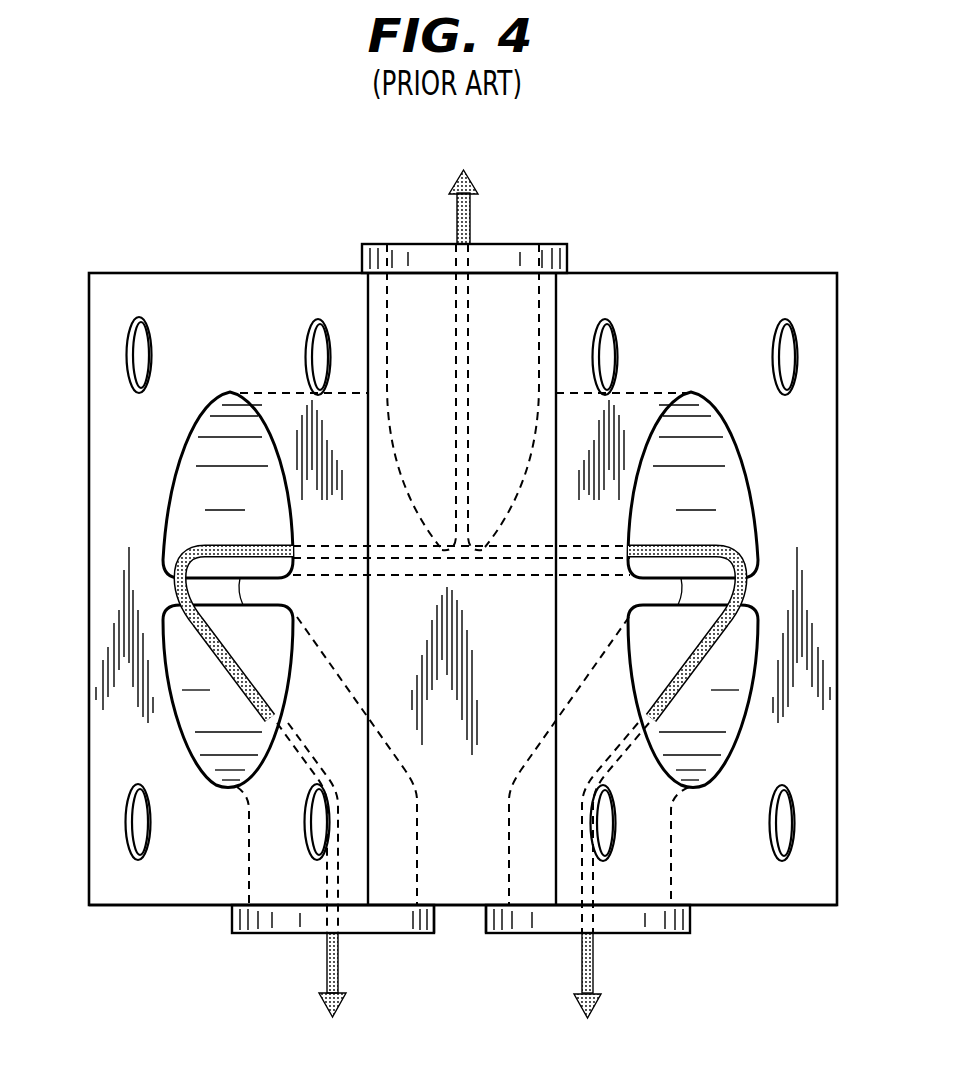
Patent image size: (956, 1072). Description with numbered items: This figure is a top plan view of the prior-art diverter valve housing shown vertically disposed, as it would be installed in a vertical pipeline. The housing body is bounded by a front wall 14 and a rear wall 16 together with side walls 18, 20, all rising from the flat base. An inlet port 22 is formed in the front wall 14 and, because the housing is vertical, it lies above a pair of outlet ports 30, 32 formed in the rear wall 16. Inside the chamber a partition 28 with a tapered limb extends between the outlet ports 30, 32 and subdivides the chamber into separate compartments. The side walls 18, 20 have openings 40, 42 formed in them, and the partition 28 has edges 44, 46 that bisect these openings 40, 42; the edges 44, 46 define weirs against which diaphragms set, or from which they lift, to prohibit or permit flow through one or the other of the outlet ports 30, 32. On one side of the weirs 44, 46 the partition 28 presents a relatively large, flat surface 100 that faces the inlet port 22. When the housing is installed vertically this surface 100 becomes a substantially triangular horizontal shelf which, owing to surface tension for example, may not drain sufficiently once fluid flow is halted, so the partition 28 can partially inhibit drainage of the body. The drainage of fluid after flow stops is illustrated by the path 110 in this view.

The front wall 14 is at (680, 274).
The rear wall 16 is at (728, 905).
The side wall 18 is at (325, 618).
The side wall 20 is at (573, 618).
The inlet port 22 is at (520, 244).
The partition 28 is at (458, 865).
The outlet port 30 is at (280, 935).
The outlet port 32 is at (633, 935).
The opening 40 is at (214, 403).
The opening 42 is at (705, 403).
The edge 44 is at (215, 590).
The edge 46 is at (652, 585).
The flat surface 100 is at (505, 570).
The path 110 is at (325, 975).